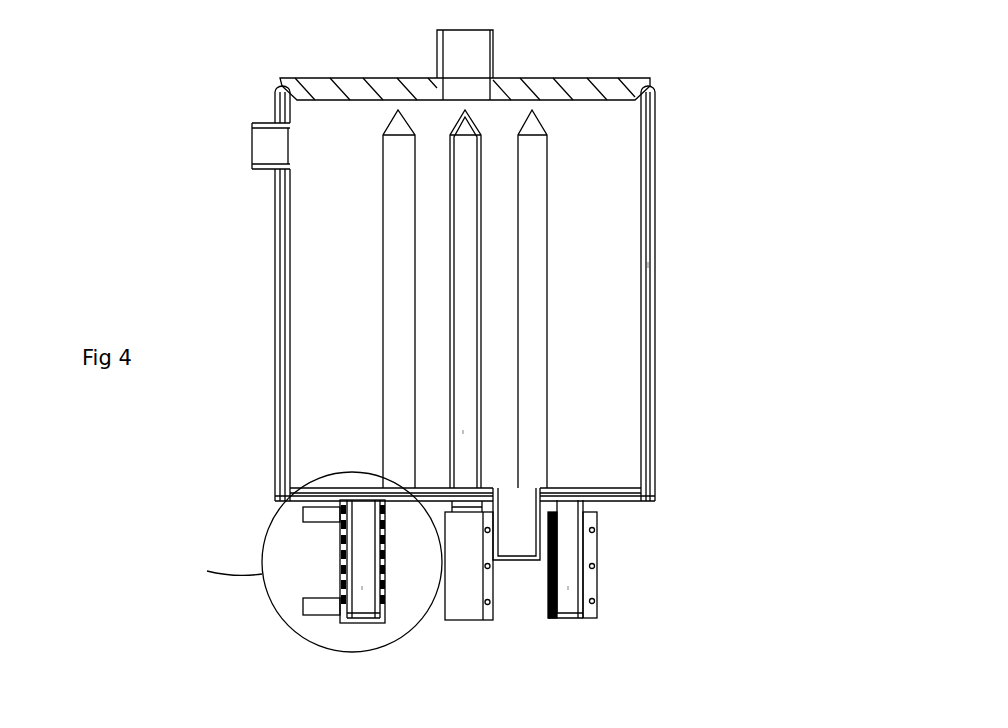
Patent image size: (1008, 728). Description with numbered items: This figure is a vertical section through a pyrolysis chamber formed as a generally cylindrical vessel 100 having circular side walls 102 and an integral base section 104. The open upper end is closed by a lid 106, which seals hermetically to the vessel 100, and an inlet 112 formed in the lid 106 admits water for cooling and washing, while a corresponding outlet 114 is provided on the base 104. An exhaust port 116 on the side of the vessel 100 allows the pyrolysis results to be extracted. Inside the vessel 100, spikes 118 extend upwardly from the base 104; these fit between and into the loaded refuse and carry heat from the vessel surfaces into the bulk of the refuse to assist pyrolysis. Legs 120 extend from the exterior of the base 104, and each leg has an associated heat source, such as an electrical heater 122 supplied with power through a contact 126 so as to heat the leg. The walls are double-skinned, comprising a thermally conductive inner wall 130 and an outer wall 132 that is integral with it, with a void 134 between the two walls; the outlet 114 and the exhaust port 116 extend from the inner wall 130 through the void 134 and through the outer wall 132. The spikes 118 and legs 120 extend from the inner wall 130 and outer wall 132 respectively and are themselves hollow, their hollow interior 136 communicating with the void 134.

The vessel 100 is at (276, 298).
The side walls 102 is at (653, 345).
The base section 104 is at (619, 501).
The lid 106 is at (593, 78).
The inlet 112 is at (492, 50).
The outlet 114 is at (518, 562).
The exhaust port 116 is at (252, 133).
The spikes 118 is at (383, 373).
The legs 120 is at (340, 555).
The electrical heater 122 is at (355, 10).
The contact 126 is at (425, 4).
The inner wall 130 is at (645, 177).
The outer wall 132 is at (655, 210).
The void 134 is at (652, 265).
The hollow interior 136 is at (463, 432).